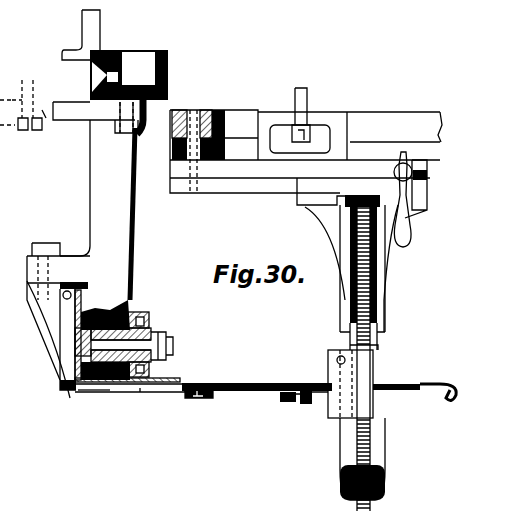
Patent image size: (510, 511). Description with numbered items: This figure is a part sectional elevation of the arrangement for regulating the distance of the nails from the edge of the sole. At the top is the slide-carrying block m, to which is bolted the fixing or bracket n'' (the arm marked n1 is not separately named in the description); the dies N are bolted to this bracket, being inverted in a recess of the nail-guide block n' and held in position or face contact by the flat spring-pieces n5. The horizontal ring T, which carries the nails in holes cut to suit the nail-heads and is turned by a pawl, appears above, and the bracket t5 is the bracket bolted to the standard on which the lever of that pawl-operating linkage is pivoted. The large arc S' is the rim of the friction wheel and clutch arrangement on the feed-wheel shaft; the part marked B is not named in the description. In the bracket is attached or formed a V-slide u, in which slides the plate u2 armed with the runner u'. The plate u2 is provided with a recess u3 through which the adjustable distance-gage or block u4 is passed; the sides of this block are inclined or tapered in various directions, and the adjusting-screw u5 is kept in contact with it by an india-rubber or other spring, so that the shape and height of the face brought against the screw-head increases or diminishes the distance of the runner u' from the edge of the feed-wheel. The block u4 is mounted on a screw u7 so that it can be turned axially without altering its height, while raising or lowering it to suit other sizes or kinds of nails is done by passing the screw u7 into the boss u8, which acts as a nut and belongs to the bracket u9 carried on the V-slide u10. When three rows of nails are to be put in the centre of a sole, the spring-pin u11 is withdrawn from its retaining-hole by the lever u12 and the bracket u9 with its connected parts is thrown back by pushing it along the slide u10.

The slide-carrying block m is at (127, 55).
The bracket arm n1 is at (95, 201).
The flat spring-pieces n5 is at (66, 334).
The nail-guide block n' is at (49, 311).
The fixing or bracket n'' is at (23, 126).
The dies N is at (62, 376).
The friction wheel and clutch arrangement S' is at (100, 353).
The bolt B is at (158, 350).
The horizontal ring T is at (200, 118).
The bracket t5 is at (228, 140).
The V-slide u is at (130, 393).
The runner u' is at (145, 404).
The plate u2 is at (234, 383).
The recess u3 is at (392, 390).
The adjustable distance-gage u4 is at (375, 370).
The adjusting-screw u5 is at (318, 402).
The screw u7 is at (370, 440).
The boss u8 is at (388, 262).
The bracket u9 is at (402, 480).
The V-slide u10 is at (213, 207).
The spring-pin u11 is at (420, 163).
The lever u12 is at (404, 232).